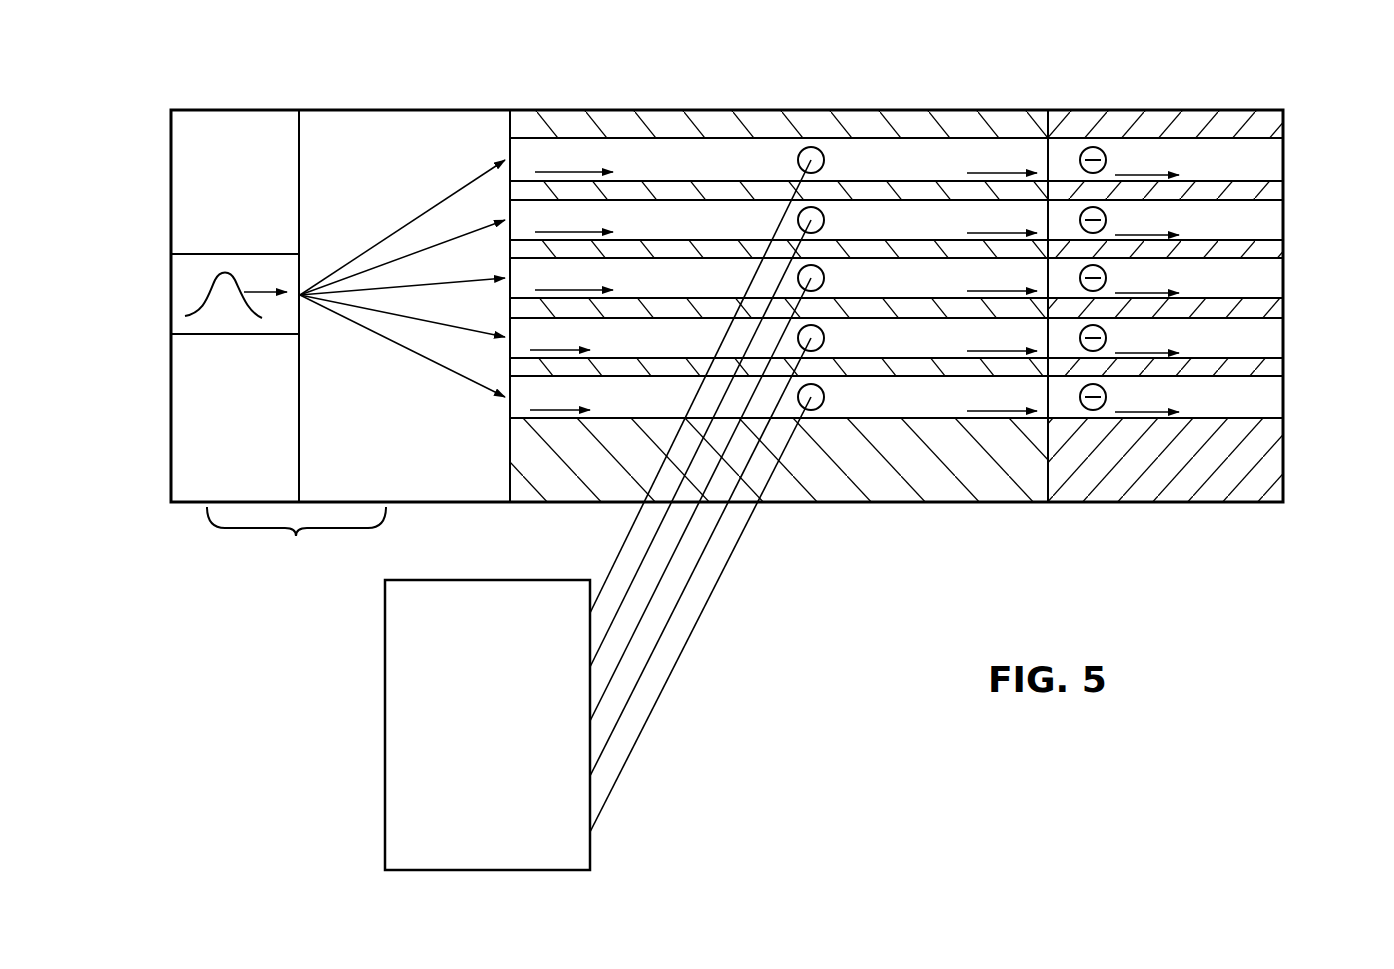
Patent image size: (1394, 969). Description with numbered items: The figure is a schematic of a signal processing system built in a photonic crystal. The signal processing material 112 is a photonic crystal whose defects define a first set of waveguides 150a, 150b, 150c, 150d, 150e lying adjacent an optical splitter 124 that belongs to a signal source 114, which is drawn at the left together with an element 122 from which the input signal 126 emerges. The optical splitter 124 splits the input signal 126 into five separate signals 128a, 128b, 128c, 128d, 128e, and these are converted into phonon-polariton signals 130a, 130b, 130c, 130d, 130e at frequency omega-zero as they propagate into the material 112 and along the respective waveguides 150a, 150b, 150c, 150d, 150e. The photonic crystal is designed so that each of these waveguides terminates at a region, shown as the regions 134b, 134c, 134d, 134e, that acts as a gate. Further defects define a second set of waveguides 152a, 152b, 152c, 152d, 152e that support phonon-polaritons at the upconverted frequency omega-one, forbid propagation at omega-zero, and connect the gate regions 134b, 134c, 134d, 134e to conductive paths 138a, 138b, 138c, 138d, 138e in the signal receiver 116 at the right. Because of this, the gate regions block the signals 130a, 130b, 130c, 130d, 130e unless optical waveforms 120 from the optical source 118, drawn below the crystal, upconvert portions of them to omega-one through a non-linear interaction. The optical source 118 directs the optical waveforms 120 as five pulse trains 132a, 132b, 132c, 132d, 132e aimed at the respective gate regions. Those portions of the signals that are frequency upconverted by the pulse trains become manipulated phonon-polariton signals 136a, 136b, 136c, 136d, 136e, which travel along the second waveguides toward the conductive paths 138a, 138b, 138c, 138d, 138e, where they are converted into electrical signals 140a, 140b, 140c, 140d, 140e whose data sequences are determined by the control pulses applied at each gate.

The signal processing material 112 is at (983, 480).
The signal source 114 is at (278, 412).
The signal receiver 116 is at (1152, 505).
The optical source 118 is at (458, 875).
The optical waveforms 120 is at (651, 496).
The light source 122 is at (210, 322).
The optical splitter 124 is at (402, 309).
The input signal 126 is at (222, 273).
The separate signal 128a is at (352, 257).
The separate signal 128b is at (394, 243).
The separate signal 128c is at (448, 277).
The separate signal 128d is at (423, 320).
The separate signal 128e is at (360, 322).
The phonon-polariton signal 130a is at (605, 159).
The phonon-polariton signal 130b is at (605, 220).
The phonon-polariton signal 130c is at (605, 278).
The phonon-polariton signal 130d is at (605, 338).
The phonon-polariton signal 130e is at (605, 397).
The optical pulse train 132a is at (615, 572).
The optical pulse train 132b is at (648, 555).
The optical pulse train 132c is at (630, 652).
The optical pulse train 132d is at (675, 618).
The optical pulse train 132e is at (715, 588).
The gate region 134b is at (824, 208).
The gate region 134c is at (823, 267).
The gate region 134d is at (818, 350).
The gate region 134e is at (800, 153).
The manipulated phonon-polariton signal 136a is at (1002, 159).
The manipulated phonon-polariton signal 136b is at (1002, 219).
The manipulated phonon-polariton signal 136c is at (1002, 277).
The manipulated phonon-polariton signal 136d is at (1002, 337).
The manipulated phonon-polariton signal 136e is at (1002, 397).
The conductive path 138a is at (1262, 162).
The conductive path 138b is at (1262, 224).
The conductive path 138c is at (1262, 282).
The conductive path 138d is at (1262, 342).
The conductive path 138e is at (1262, 402).
The electrical signal 140a is at (1129, 161).
The electrical signal 140b is at (1129, 221).
The electrical signal 140c is at (1129, 279).
The electrical signal 140d is at (1129, 339).
The electrical signal 140e is at (1129, 398).
The waveguide 150a is at (785, 175).
The waveguide 150b is at (777, 235).
The waveguide 150c is at (750, 293).
The waveguide 150d is at (720, 353).
The waveguide 150e is at (672, 390).
The waveguide 152a is at (902, 175).
The waveguide 152b is at (902, 235).
The waveguide 152c is at (892, 293).
The waveguide 152d is at (894, 353).
The waveguide 152e is at (904, 413).